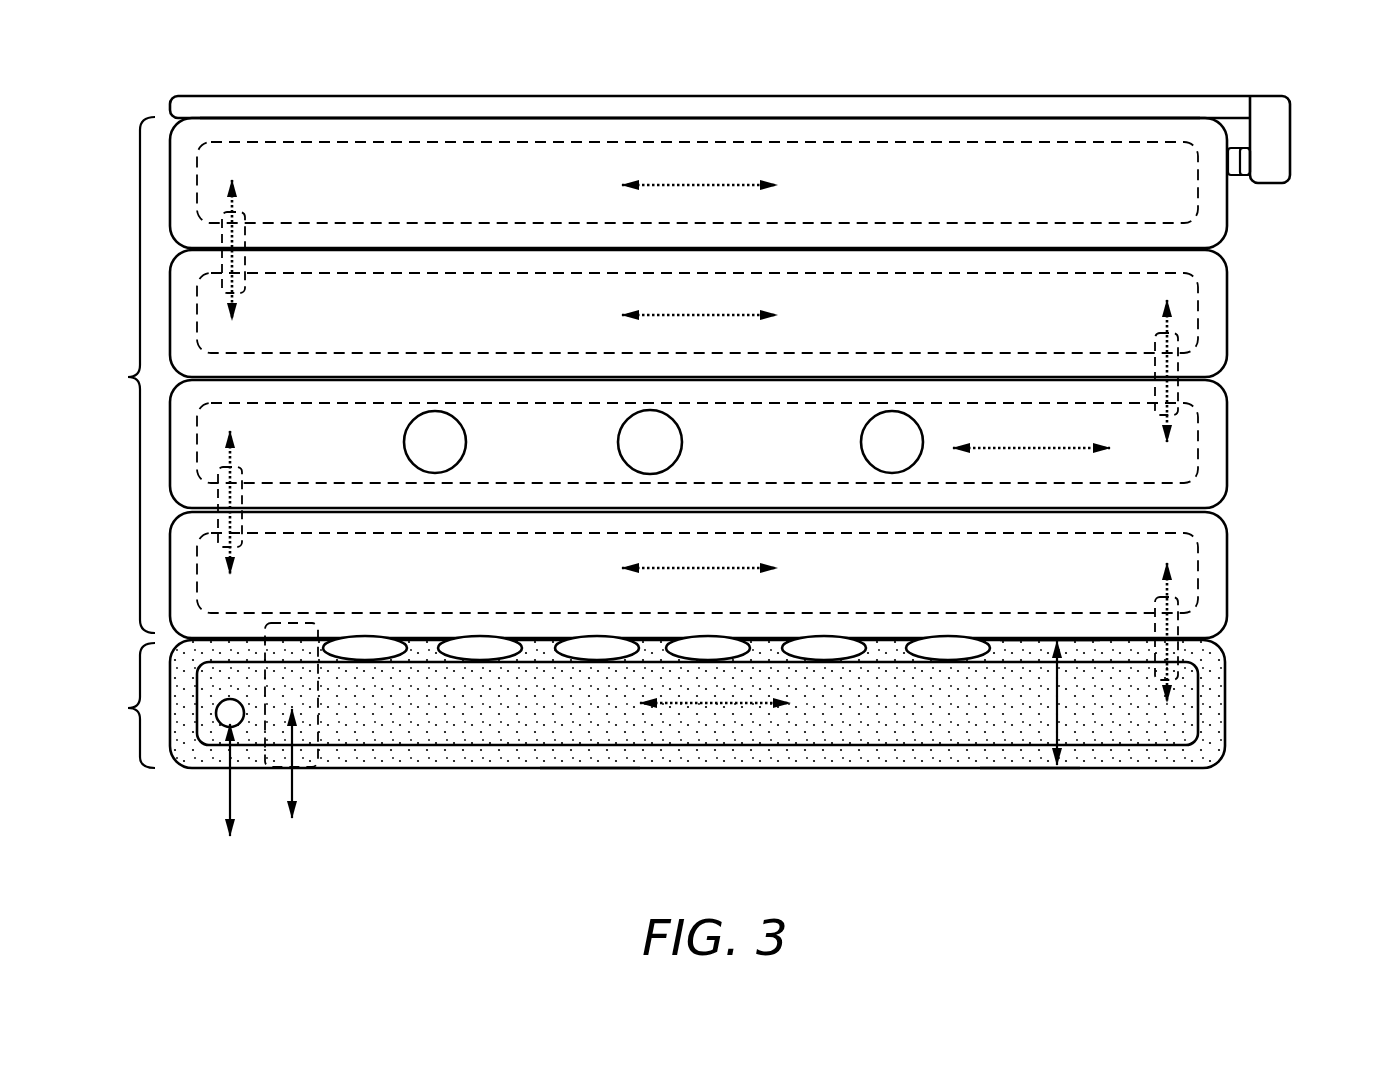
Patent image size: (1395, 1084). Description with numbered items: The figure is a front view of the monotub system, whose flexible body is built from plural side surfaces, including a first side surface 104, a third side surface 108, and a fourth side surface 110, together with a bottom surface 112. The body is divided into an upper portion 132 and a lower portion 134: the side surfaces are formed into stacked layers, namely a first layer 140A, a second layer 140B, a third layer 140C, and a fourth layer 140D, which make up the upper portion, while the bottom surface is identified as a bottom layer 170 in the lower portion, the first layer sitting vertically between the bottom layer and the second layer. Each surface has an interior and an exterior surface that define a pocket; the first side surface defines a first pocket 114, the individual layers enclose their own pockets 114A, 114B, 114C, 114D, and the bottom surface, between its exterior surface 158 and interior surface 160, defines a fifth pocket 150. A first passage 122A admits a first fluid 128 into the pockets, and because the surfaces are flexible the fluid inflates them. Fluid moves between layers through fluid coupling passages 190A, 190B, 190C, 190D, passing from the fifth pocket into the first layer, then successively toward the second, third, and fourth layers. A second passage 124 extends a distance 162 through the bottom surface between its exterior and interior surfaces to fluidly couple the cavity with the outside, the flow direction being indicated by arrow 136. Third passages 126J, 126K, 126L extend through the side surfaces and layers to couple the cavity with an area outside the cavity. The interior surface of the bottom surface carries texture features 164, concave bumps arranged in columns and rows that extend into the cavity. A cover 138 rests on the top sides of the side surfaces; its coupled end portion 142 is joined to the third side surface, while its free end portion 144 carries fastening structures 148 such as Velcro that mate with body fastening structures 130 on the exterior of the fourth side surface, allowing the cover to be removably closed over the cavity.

The first side surface 104 is at (741, 159).
The third side surface 108 is at (693, 429).
The fourth side surface 110 is at (718, 452).
The bottom surface 112 is at (584, 772).
The first pocket 114 is at (747, 141).
The bladder of first layer 114A is at (1185, 572).
The bladder of second layer 114B is at (1185, 432).
The bladder of third layer 114C is at (1185, 314).
The bladder of fourth layer 114D is at (1185, 191).
The conduit 122A is at (218, 727).
The second passage 124 is at (320, 709).
The third passage 126J is at (887, 460).
The opening 126K is at (648, 438).
The opening 126L is at (436, 438).
The first fluid 128 is at (234, 790).
The body fastening structures 130 is at (1231, 114).
The upper portion 132 is at (117, 375).
The lower portion 134 is at (118, 705).
The vertical direction 136 is at (296, 790).
The cover 138 is at (366, 115).
The first layer 140A is at (1231, 602).
The second layer 140B is at (1215, 465).
The third layer 140C is at (1214, 343).
The fourth layer 140D is at (1221, 235).
The coupled end portion 142 is at (726, 123).
The free end portion 144 is at (1294, 107).
The fastening structures 148 is at (1247, 148).
The fifth pocket 150 is at (520, 709).
The exterior surface 158 is at (1033, 771).
The interior surface 160 is at (1070, 644).
The distance 162 is at (1058, 725).
The texture features 164 is at (598, 664).
The bottom layer 170 is at (741, 743).
The fluid coupling passage 190A is at (1177, 652).
The fluid coupling passage 190B is at (217, 522).
The fluid coupling feature 190C is at (1179, 392).
The fluid coupling feature 190D is at (217, 258).